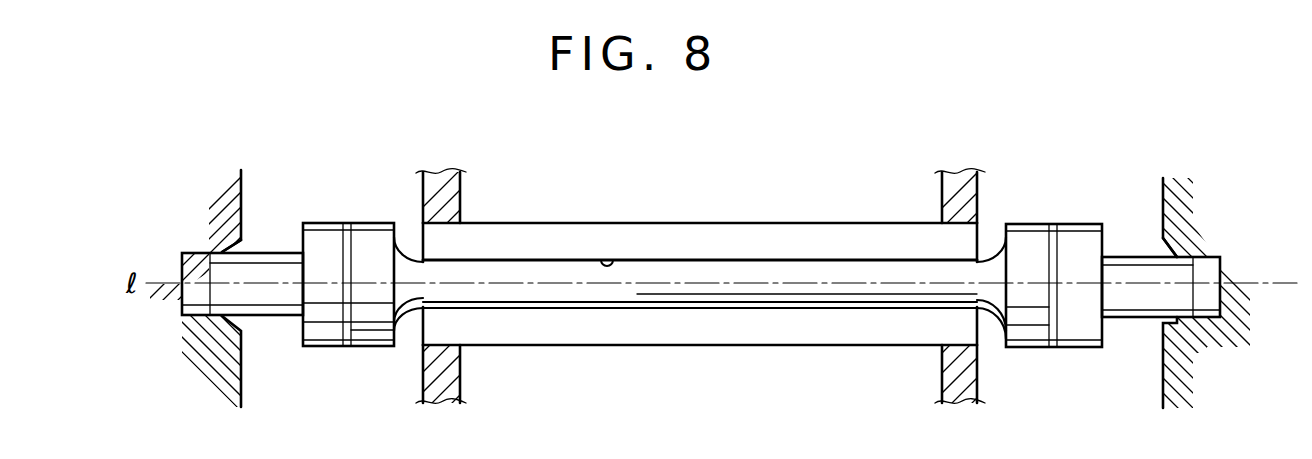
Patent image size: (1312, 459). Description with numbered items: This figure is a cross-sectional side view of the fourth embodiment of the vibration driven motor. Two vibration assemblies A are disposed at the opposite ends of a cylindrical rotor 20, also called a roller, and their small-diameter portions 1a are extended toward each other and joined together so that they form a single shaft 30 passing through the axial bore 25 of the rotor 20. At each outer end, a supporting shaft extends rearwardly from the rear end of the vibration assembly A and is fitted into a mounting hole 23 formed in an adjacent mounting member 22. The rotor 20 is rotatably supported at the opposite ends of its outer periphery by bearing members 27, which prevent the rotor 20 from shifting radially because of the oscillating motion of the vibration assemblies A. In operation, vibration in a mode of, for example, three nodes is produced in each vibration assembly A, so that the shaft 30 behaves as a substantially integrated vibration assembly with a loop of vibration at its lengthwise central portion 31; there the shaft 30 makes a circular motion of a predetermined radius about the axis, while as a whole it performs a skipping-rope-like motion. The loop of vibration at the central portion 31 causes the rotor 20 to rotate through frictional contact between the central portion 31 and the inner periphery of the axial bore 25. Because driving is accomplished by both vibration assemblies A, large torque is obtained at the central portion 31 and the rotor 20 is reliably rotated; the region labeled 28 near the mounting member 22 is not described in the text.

The small-diameter portion 1a is at (500, 275).
The rotor 20 is at (540, 334).
The mounting member 22 is at (193, 201).
The mounting hole 23 is at (197, 312).
The axial bore 25 is at (608, 257).
The bearing member 27 is at (422, 402).
The wall bore 28 is at (228, 250).
The shaft 30 is at (692, 290).
The lengthwise central portion 31 is at (707, 290).
The vibration assembly A is at (348, 217).